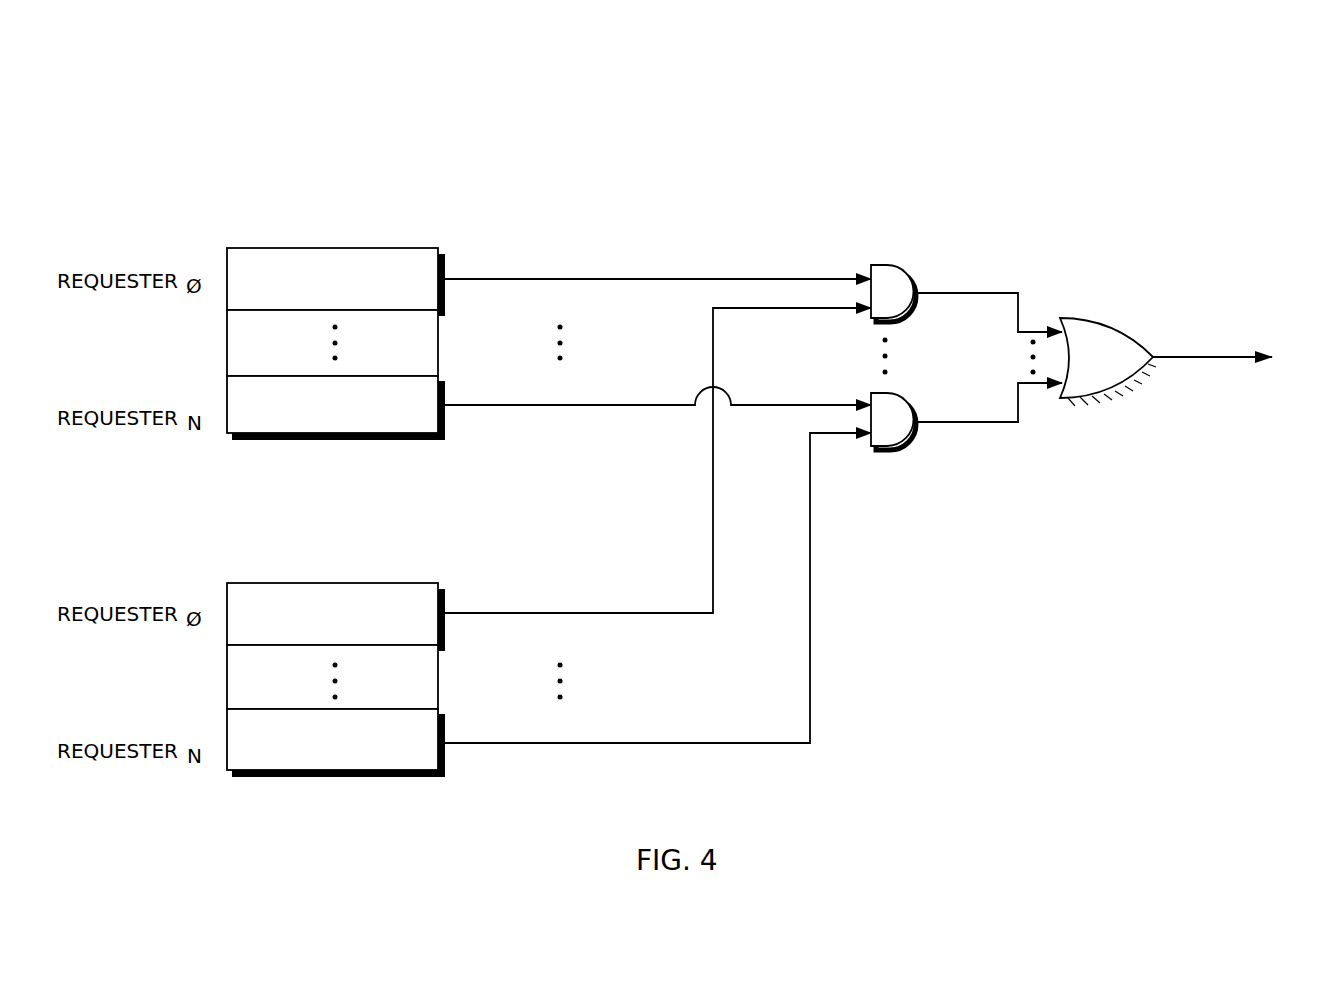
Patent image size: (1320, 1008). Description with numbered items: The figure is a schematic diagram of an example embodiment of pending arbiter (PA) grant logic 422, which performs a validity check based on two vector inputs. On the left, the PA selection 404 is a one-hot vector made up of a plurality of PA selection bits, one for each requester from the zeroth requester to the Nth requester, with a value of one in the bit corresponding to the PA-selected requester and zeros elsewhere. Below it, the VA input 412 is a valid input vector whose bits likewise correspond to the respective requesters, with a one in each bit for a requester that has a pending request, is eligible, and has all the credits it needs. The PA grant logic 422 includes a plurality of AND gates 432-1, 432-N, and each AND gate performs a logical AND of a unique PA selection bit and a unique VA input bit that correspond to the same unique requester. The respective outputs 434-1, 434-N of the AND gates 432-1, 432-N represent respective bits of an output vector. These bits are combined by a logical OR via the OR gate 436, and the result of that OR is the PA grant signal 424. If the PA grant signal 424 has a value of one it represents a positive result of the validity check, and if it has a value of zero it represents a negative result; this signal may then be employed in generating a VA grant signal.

The pending arbiter (PA) grant logic 422 is at (1202, 105).
The PA selection 404 is at (372, 235).
The VA input 412 is at (378, 560).
The AND gate 432-1 is at (898, 270).
The AND gate 432-N is at (898, 396).
The output of AND gate 434-1 is at (982, 293).
The output of AND gate 434-N is at (940, 422).
The OR gate 436 is at (1108, 325).
The PA grant signal 424 is at (1215, 357).